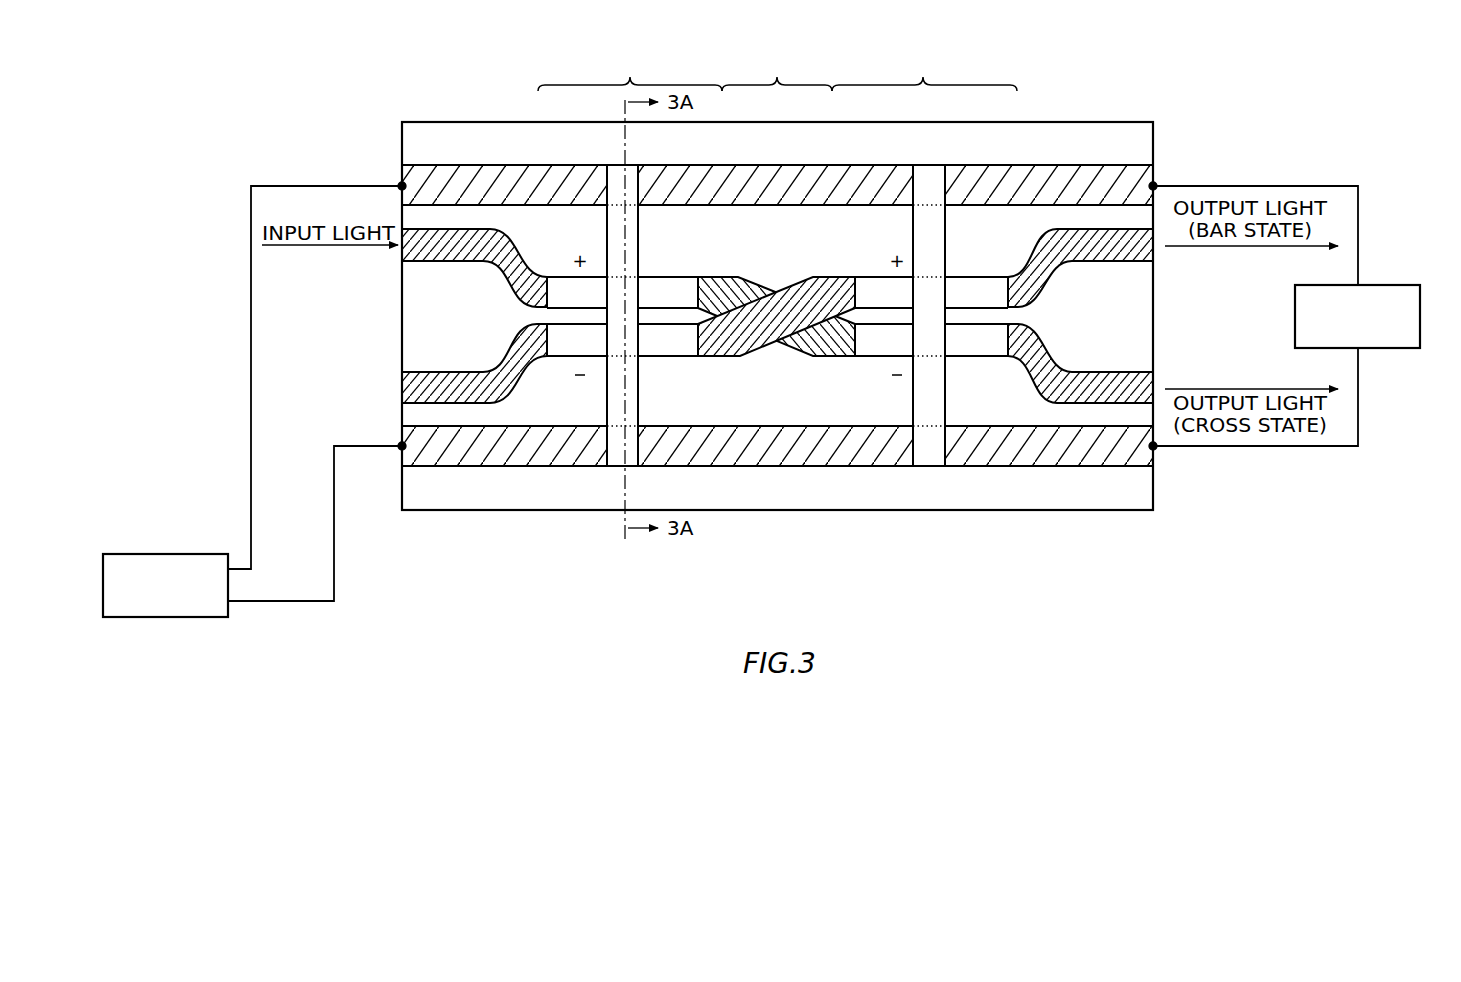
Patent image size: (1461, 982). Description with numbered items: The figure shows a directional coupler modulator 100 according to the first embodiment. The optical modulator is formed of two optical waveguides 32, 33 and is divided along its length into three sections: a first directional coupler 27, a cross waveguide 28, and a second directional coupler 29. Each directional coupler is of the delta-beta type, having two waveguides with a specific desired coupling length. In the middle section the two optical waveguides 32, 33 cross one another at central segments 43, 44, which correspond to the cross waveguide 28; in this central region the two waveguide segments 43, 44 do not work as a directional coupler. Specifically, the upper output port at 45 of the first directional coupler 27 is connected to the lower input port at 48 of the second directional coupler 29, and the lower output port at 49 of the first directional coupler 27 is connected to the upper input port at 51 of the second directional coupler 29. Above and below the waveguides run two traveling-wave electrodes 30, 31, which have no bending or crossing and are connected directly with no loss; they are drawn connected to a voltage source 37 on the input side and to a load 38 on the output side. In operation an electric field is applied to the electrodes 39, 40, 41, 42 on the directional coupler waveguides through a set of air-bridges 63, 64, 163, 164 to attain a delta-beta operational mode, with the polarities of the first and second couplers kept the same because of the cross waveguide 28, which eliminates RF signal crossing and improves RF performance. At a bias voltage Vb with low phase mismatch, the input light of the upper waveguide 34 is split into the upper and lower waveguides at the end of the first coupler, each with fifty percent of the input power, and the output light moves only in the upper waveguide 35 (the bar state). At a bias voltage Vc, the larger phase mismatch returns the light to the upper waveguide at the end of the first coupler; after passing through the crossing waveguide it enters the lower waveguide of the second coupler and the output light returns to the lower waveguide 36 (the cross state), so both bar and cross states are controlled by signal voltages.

The directional coupler modulator 100 is at (250, 128).
The first directional coupler 27 is at (630, 71).
The cross waveguide 28 is at (777, 71).
The second directional coupler 29 is at (924, 71).
The traveling-wave electrode 30 is at (472, 164).
The traveling-wave electrode 31 is at (472, 467).
The optical waveguide 32 is at (520, 253).
The optical waveguide 33 is at (520, 380).
The upper waveguide 34 is at (420, 262).
The upper waveguide 35 is at (1133, 264).
The lower waveguide 36 is at (1133, 372).
The voltage source 37 is at (153, 596).
The voltage source 38 is at (1346, 328).
The electrode 39 is at (662, 277).
The electrode 40 is at (662, 357).
The electrode 41 is at (993, 276).
The electrode 42 is at (993, 357).
The central segment 43 is at (755, 287).
The central segment 44 is at (762, 343).
The upper output port 45 is at (700, 277).
The lower output port 49 is at (700, 357).
The upper input port 51 is at (855, 277).
The lower input port 48 is at (855, 357).
The air-bridge 63 is at (607, 265).
The air-bridge 64 is at (607, 368).
The air-bridge 163 is at (947, 265).
The air-bridge 164 is at (947, 368).